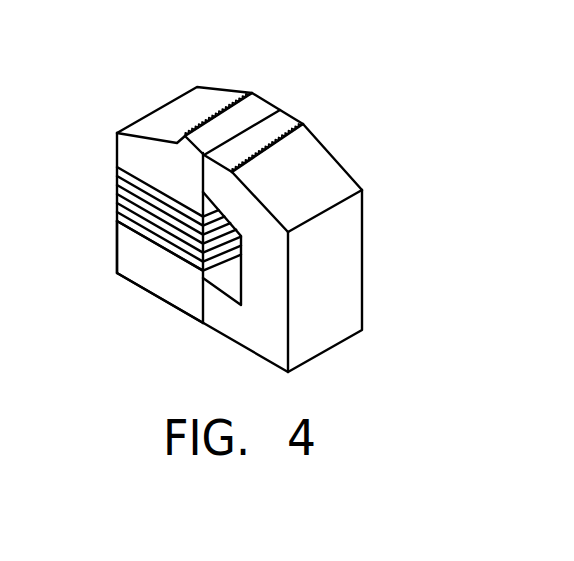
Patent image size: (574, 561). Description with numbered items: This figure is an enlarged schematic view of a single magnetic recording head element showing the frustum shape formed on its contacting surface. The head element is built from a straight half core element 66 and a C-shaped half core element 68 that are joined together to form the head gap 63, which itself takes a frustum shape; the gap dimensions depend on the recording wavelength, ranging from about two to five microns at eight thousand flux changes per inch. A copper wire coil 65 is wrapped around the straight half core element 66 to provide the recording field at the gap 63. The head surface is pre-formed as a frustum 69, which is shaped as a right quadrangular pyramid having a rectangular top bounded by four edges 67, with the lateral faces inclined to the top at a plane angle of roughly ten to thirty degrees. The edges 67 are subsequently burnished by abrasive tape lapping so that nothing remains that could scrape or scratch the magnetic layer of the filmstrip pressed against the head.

The head gap 63 is at (278, 104).
The copper wire coil 65 is at (118, 198).
The straight half core element 66 is at (152, 280).
The edges 67 is at (304, 124).
The C-shaped half core element 68 is at (248, 333).
The frustum 69 is at (182, 128).